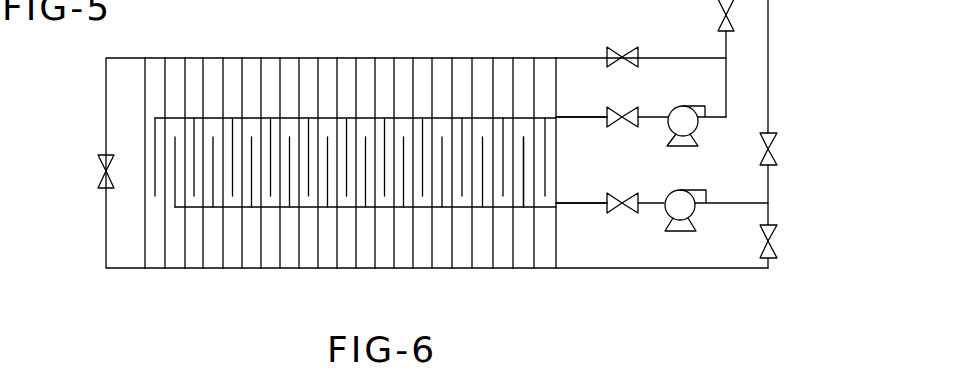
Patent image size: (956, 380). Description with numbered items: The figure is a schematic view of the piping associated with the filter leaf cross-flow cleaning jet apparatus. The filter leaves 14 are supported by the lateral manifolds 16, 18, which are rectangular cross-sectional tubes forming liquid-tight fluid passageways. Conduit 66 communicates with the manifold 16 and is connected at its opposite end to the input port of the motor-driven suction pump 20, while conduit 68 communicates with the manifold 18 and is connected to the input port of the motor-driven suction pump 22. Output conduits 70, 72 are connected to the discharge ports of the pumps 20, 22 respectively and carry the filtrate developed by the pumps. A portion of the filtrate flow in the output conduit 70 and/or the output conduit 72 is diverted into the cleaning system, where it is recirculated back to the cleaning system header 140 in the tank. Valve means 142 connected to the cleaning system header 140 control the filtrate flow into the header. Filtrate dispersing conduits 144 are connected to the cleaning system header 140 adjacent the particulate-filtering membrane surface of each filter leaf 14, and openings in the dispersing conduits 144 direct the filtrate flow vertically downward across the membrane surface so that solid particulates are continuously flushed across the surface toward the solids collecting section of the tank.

The filter leaf 14 is at (523, 184).
The manifold 16 is at (307, 206).
The manifold 18 is at (223, 118).
The motor-driven suction pump 20 is at (710, 170).
The motor-driven suction pump 22 is at (698, 80).
The conduit 66 is at (573, 208).
The conduit 68 is at (562, 119).
The output conduit 70 is at (732, 200).
The output conduit 72 is at (726, 83).
The cleaning system header 140 is at (156, 58).
The valve means 142 is at (618, 48).
The filtrate dispersing conduit 144 is at (530, 17).